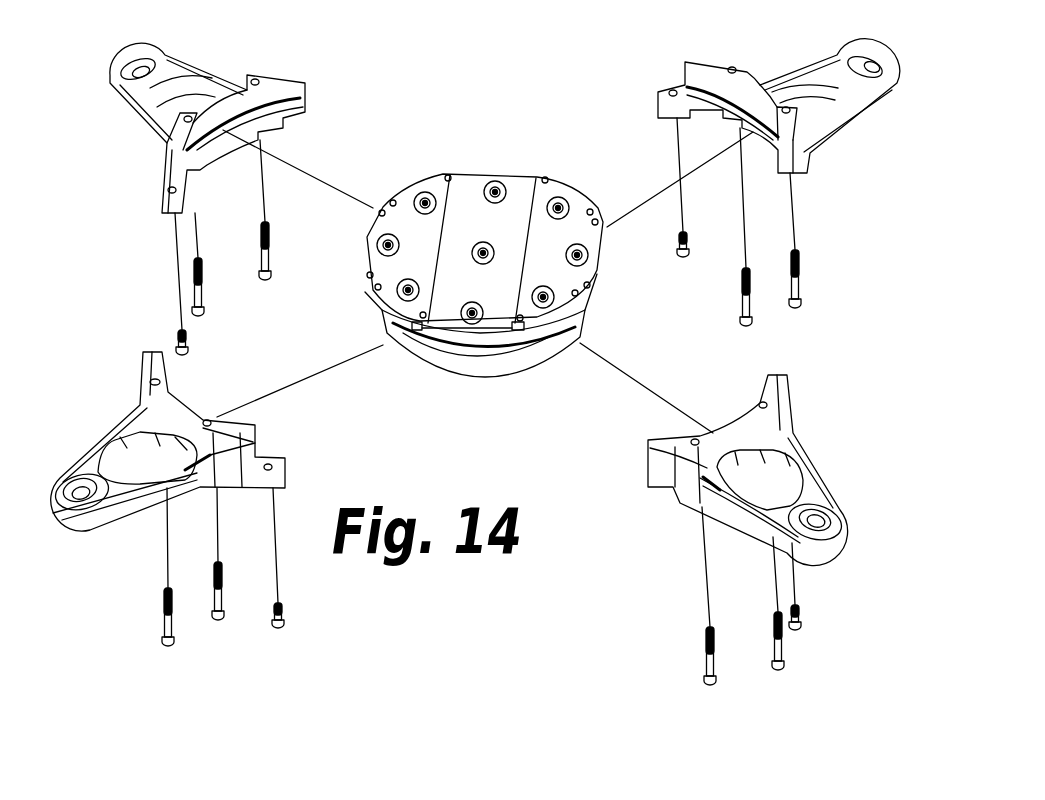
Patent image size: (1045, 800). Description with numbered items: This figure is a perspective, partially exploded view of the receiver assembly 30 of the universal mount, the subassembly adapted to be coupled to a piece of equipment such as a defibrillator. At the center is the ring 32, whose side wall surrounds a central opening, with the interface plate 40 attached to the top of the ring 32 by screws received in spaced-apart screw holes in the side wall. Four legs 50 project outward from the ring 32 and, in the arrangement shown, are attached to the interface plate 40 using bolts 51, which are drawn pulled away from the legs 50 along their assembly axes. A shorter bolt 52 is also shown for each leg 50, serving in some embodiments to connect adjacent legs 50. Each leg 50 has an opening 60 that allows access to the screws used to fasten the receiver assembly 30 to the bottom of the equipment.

The receiver assembly 30 is at (522, 148).
The ring 32 is at (507, 362).
The interface plate 40 is at (468, 195).
The leg 50 is at (130, 100).
The bolt 51 is at (203, 317).
The bolt 52 is at (177, 338).
The opening 60 is at (183, 102).